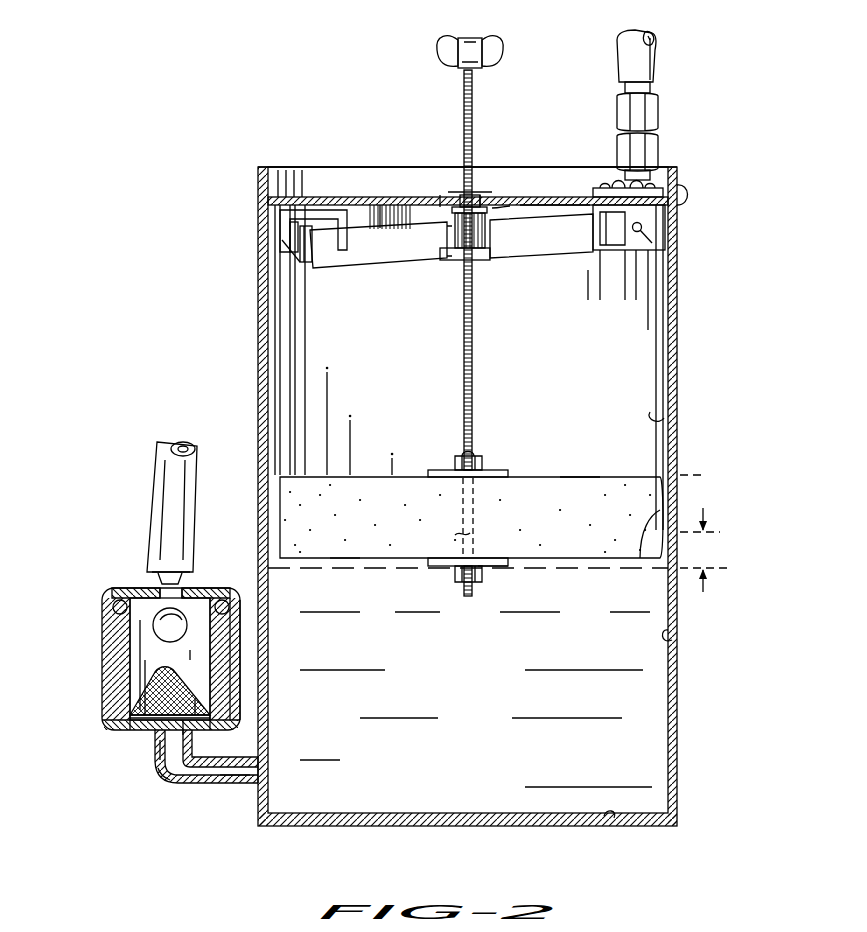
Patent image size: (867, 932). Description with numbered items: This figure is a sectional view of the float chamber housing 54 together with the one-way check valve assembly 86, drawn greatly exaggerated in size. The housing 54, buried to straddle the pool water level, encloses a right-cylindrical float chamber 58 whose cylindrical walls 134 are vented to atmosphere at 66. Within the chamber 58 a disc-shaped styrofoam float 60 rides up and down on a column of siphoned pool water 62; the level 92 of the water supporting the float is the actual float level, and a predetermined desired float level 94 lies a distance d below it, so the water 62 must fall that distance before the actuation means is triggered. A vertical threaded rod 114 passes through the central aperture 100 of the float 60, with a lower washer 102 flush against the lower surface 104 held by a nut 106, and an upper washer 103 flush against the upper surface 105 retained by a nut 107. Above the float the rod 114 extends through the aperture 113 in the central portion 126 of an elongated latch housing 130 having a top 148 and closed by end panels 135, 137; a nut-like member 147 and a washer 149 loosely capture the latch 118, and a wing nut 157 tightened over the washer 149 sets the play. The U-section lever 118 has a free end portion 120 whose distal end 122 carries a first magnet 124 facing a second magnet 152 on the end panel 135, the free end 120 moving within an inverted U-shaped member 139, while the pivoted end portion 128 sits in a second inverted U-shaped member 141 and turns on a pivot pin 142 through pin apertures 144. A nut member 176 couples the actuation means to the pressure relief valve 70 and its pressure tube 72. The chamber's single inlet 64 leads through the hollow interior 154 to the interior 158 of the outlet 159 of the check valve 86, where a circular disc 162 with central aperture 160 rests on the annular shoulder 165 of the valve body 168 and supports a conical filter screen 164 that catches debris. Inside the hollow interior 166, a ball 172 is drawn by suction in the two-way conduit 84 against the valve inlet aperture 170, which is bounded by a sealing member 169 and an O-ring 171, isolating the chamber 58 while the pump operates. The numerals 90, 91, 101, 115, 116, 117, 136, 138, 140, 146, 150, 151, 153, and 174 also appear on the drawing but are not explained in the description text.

The float chamber housing 54 is at (683, 385).
The float chamber 58 is at (672, 638).
The float member 60 is at (560, 508).
The siphoned pool water 62 is at (387, 652).
The float chamber inlet conduit 64 is at (268, 770).
The vent to atmosphere 66 is at (327, 190).
The pressure relief valve apparatus 70 is at (660, 110).
The pressure conduit or tube 72 is at (660, 57).
The two-way conduit 84 is at (205, 455).
The check valve assembly 86 is at (102, 655).
The upper level line 90 is at (695, 478).
The platform underside 91 is at (342, 547).
The float level 92 is at (715, 532).
The predetermined desired float level 94 is at (565, 595).
The central aperture 100 is at (460, 535).
The platform edge 101 is at (663, 515).
The lower washer 102 is at (495, 595).
The upper washer 103 is at (448, 475).
The lower surface 104 is at (340, 597).
The upper surface 105 is at (570, 472).
The nut 106 is at (442, 598).
The nut 107 is at (466, 460).
The aperture 113 is at (437, 198).
The rod 114 is at (475, 340).
The washer 115 is at (477, 195).
The adjusting nut 116 is at (492, 268).
The lever arm 117 is at (390, 268).
The latch 118 is at (588, 300).
The free end portion 120 is at (340, 290).
The distal end 122 is at (315, 262).
The first magnet 124 is at (277, 265).
The central portion 126 is at (432, 232).
The pivoted end portion 128 is at (605, 250).
The elongated housing 130 is at (548, 197).
The cylindrical walls 134 is at (658, 418).
The end panel 135 is at (283, 250).
The inner liner 136 is at (278, 242).
The end panel 137 is at (650, 240).
The switch lead 138 is at (665, 262).
The inverted U-shaped member 139 is at (354, 210).
The switch box 140 is at (650, 221).
The second inverted U-shaped member 141 is at (590, 228).
The pivot pin 142 is at (636, 240).
The pin apertures 144 is at (643, 232).
The switch wire 146 is at (633, 250).
The nut-like member 147 is at (462, 262).
The top 148 is at (382, 222).
The washer 149 is at (493, 208).
The lid fastener 150 is at (688, 198).
The shaft collar 151 is at (457, 205).
The second magnet 152 is at (298, 200).
The washer 153 is at (478, 200).
The hollow interior 154 is at (235, 785).
The wing nut 157 is at (505, 47).
The interior of outlet 158 is at (167, 790).
The outlet 159 is at (160, 778).
The central aperture 160 is at (155, 752).
The circular disc 162 is at (195, 728).
The filter screen 164 is at (140, 695).
The annular shoulder portion 165 is at (140, 730).
The hollow interior 166 is at (140, 665).
The valve body 168 is at (247, 605).
The sealing member 169 is at (110, 633).
The valve inlet aperture 170 is at (158, 612).
The O-ring 171 is at (242, 612).
The ball 172 is at (210, 605).
The valve stem 174 is at (152, 548).
The nut member 176 is at (662, 190).